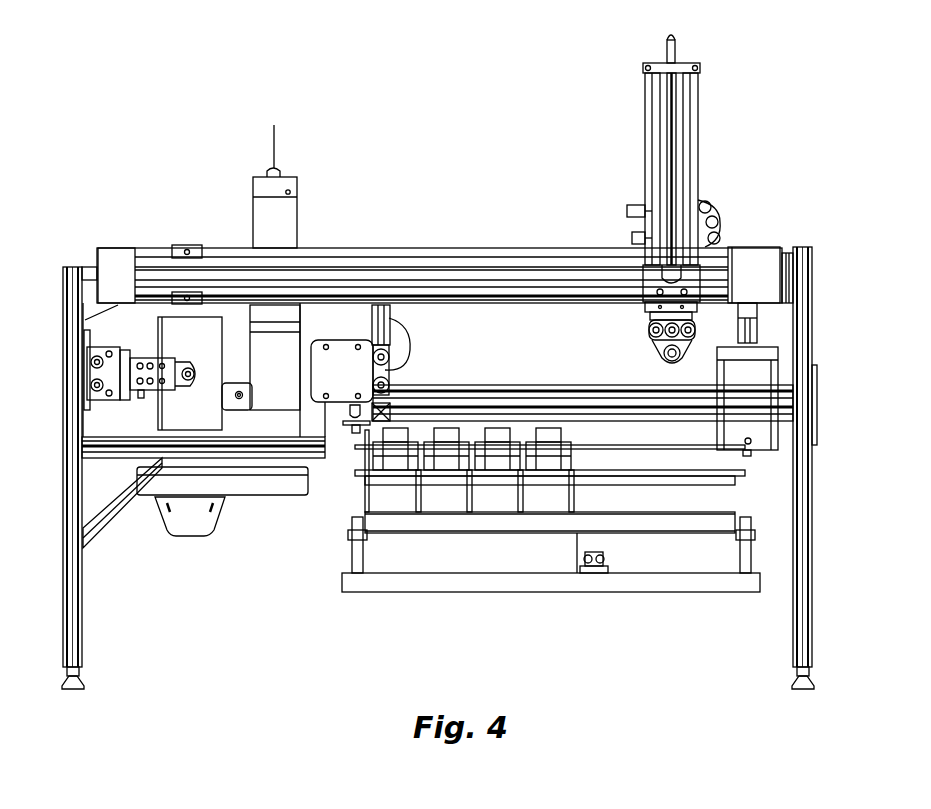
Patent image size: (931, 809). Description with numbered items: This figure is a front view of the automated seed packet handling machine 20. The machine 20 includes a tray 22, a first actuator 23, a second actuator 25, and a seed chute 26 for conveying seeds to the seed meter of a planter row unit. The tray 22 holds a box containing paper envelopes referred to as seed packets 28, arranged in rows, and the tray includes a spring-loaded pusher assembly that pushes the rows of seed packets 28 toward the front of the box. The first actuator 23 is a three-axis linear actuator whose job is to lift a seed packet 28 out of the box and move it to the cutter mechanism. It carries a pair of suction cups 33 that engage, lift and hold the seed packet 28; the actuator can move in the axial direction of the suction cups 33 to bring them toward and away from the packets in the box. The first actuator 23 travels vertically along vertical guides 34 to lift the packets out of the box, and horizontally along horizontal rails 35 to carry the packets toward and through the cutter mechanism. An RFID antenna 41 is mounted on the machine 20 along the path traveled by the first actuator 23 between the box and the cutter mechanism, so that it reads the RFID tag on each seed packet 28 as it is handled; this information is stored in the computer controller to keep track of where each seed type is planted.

The automated seed packet handling machine 20 is at (300, 105).
The tray 22 is at (490, 585).
The first actuator 23 is at (750, 262).
The second actuator 25 is at (127, 347).
The seed chute 26 is at (195, 525).
The seed packets 28 is at (200, 400).
The suction cups 33 is at (662, 360).
The vertical guides 34 is at (652, 127).
The horizontal rails 35 is at (538, 253).
The RFID antenna 41 is at (341, 360).